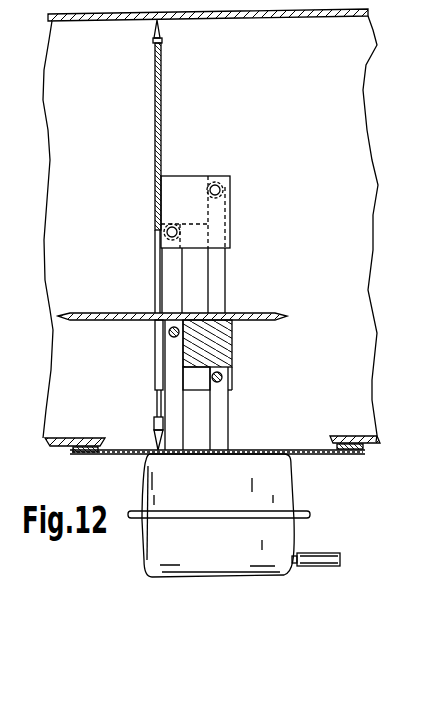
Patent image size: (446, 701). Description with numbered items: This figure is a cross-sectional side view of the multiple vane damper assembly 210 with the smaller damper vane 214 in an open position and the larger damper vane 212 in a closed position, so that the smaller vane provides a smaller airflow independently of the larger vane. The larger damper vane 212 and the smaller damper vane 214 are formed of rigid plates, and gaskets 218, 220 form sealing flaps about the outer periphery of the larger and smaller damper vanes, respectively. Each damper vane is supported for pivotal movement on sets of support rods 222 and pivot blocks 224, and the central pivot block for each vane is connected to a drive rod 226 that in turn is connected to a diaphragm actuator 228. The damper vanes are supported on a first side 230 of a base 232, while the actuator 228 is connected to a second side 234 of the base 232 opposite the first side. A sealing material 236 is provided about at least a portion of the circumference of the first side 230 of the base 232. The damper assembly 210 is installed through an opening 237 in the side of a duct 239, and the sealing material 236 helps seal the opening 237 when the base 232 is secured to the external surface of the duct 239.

The damper assembly 210 is at (295, 119).
The larger damper vane 212 is at (155, 95).
The smaller damper vane 214 is at (110, 312).
The gasket 218 is at (160, 30).
The gasket 220 is at (75, 320).
The support rods 222 is at (177, 277).
The pivot blocks 224 is at (177, 195).
The drive rod 226 is at (215, 273).
The diaphragm actuator 228 is at (280, 498).
The first side 230 is at (263, 447).
The base 232 is at (313, 454).
The second side 234 is at (115, 454).
The sealing material 236 is at (350, 450).
The opening 237 is at (112, 443).
The duct 239 is at (263, 21).